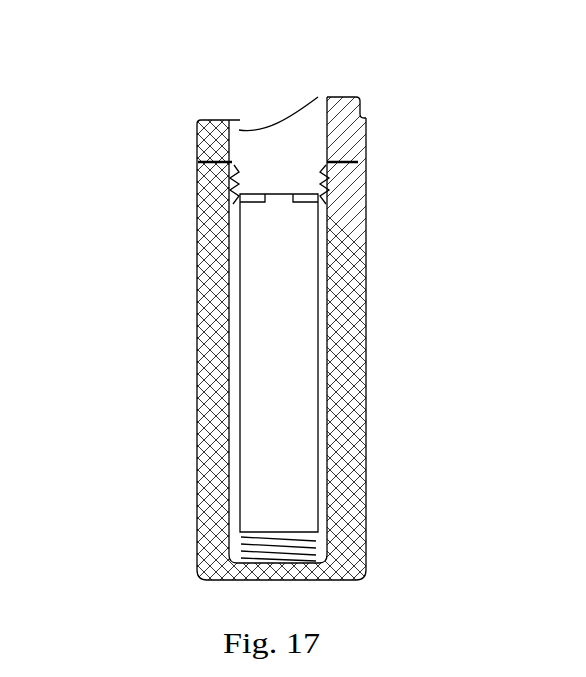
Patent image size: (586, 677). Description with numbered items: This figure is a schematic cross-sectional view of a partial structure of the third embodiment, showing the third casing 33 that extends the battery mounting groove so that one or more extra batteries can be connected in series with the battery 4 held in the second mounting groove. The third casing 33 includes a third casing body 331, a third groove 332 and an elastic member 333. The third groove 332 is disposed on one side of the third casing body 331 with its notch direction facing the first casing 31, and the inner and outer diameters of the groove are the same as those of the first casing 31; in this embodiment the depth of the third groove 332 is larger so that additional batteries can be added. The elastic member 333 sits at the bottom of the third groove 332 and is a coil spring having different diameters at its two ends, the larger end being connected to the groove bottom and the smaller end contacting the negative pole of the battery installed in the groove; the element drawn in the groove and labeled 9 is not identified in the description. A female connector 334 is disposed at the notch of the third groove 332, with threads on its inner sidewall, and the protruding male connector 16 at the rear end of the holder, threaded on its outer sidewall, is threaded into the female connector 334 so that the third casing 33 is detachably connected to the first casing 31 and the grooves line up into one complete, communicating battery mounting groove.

The battery 4 is at (273, 132).
The battery cell 9 is at (287, 445).
The male connector 16 is at (355, 178).
The first casing 31 is at (366, 122).
The third casing 33 is at (360, 328).
The third casing body 331 is at (337, 553).
The third groove 332 is at (233, 410).
The elastic member 333 is at (237, 545).
The female connector 334 is at (200, 183).